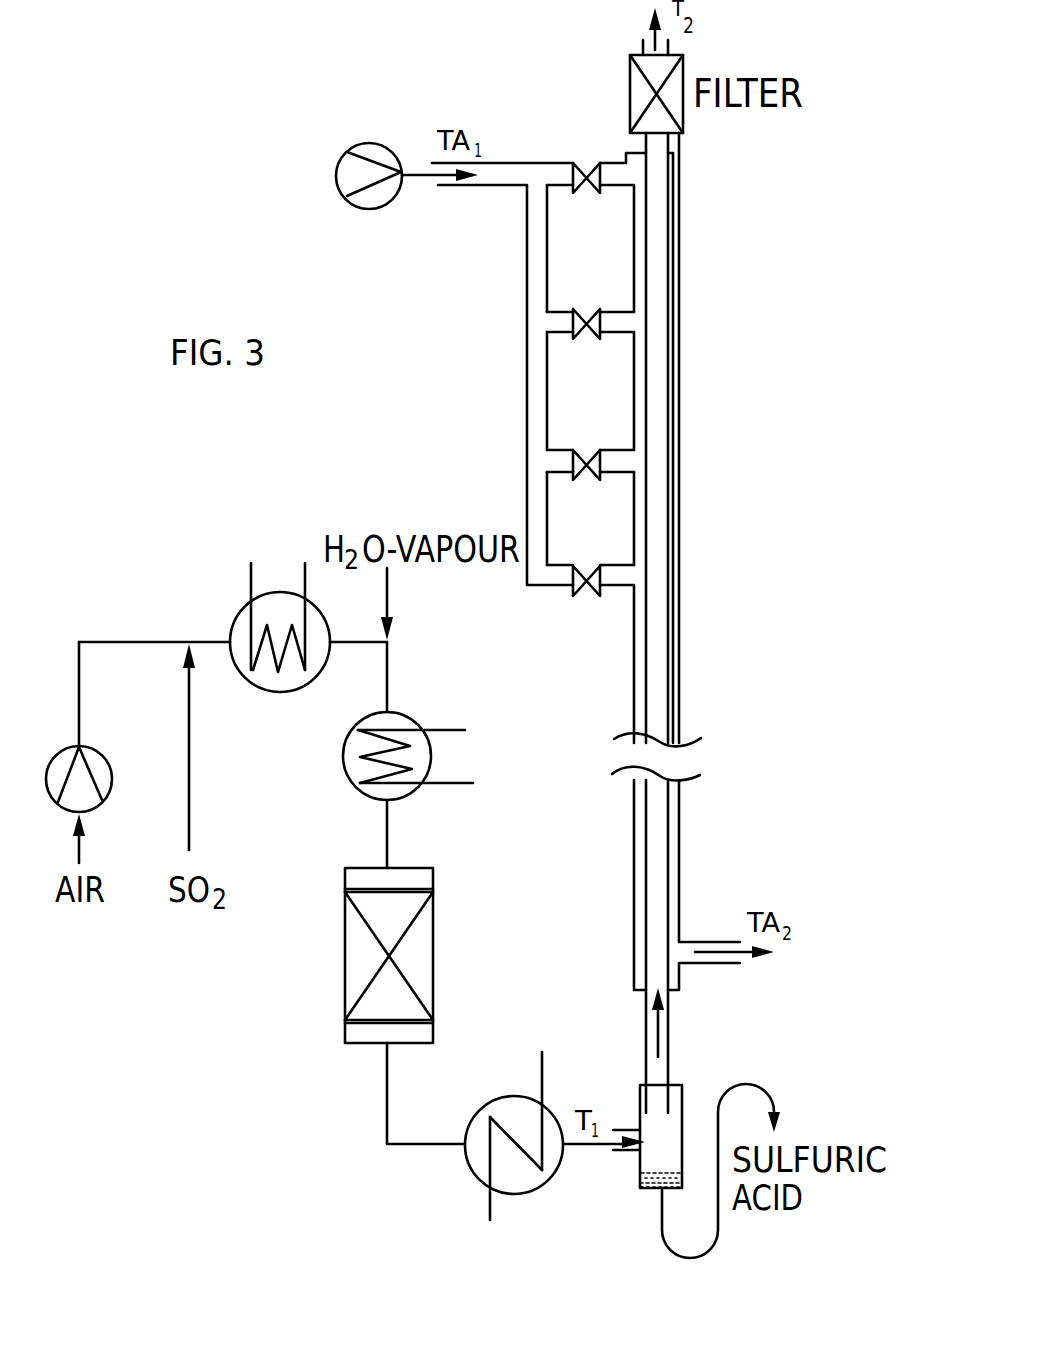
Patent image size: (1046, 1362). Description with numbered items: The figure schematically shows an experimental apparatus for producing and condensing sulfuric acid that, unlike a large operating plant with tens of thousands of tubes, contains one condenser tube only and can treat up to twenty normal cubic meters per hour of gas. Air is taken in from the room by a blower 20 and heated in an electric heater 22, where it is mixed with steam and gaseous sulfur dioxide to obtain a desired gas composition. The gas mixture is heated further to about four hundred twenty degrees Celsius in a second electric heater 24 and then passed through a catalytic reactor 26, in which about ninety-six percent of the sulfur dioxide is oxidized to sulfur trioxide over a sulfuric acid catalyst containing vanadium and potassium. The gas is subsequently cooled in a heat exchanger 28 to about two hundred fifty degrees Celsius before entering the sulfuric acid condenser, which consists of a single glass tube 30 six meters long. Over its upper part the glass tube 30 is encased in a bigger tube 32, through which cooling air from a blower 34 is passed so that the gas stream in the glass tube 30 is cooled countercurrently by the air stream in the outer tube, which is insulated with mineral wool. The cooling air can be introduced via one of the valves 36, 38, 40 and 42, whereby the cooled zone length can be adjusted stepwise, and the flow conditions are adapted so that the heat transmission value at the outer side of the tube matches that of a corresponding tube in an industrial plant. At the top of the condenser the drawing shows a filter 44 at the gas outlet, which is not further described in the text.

The blower 20 is at (111, 796).
The electric heater 22 is at (231, 618).
The electric heater 24 is at (344, 771).
The catalytic reactor 26 is at (433, 978).
The heat exchanger 28 is at (489, 1099).
The glass tube 30 is at (658, 600).
The bigger tube 32 is at (680, 671).
The blower 34 is at (382, 142).
The valve 36 is at (599, 143).
The valve 38 is at (599, 293).
The valve 40 is at (600, 429).
The valve 42 is at (601, 548).
The filter 44 is at (630, 110).